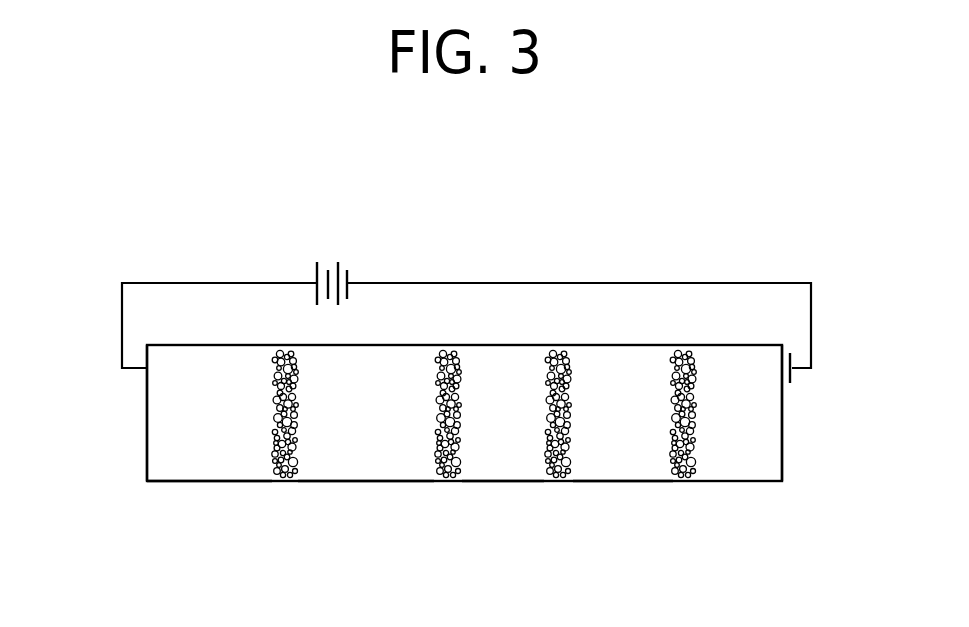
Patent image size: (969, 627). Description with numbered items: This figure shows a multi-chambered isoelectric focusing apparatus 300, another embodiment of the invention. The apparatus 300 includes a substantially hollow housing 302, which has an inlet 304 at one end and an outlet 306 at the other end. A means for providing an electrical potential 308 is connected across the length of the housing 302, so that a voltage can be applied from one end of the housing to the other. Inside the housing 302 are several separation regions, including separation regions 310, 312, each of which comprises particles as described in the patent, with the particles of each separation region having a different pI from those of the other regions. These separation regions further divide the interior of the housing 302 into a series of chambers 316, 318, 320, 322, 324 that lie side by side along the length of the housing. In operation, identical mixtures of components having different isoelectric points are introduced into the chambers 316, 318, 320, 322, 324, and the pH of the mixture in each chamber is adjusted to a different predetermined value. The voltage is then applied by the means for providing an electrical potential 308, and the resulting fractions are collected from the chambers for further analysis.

The apparatus 300 is at (199, 214).
The housing 302 is at (572, 484).
The inlet 304 is at (147, 432).
The outlet 306 is at (782, 437).
The means for providing an electrical potential 308 is at (718, 283).
The separation region 310 is at (312, 439).
The separation region 312 is at (422, 442).
The chamber 316 is at (233, 463).
The chamber 318 is at (370, 455).
The chamber 320 is at (498, 455).
The chamber 322 is at (632, 460).
The chamber 324 is at (765, 405).